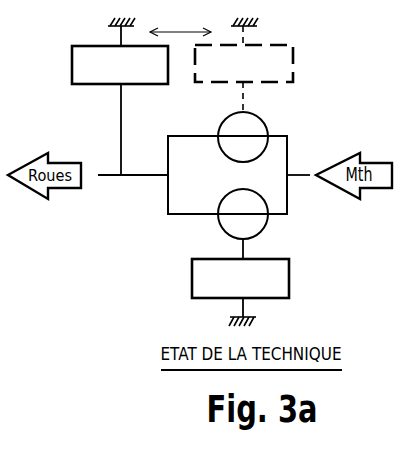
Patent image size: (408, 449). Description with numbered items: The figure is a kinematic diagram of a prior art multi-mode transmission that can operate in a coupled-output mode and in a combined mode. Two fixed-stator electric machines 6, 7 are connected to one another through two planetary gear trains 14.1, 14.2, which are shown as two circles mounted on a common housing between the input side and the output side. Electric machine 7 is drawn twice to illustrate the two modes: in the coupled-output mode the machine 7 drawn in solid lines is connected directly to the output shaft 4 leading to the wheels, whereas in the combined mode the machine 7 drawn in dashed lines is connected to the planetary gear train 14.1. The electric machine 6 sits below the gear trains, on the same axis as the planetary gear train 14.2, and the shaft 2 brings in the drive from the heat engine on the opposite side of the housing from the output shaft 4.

The electric machine 7 is at (72, 63).
The planetary gear train 14.1 is at (266, 123).
The planetary gear train 14.2 is at (221, 224).
The output shaft 4 is at (112, 177).
The input shaft from heat engine 2 is at (295, 177).
The electric machine 6 is at (289, 277).